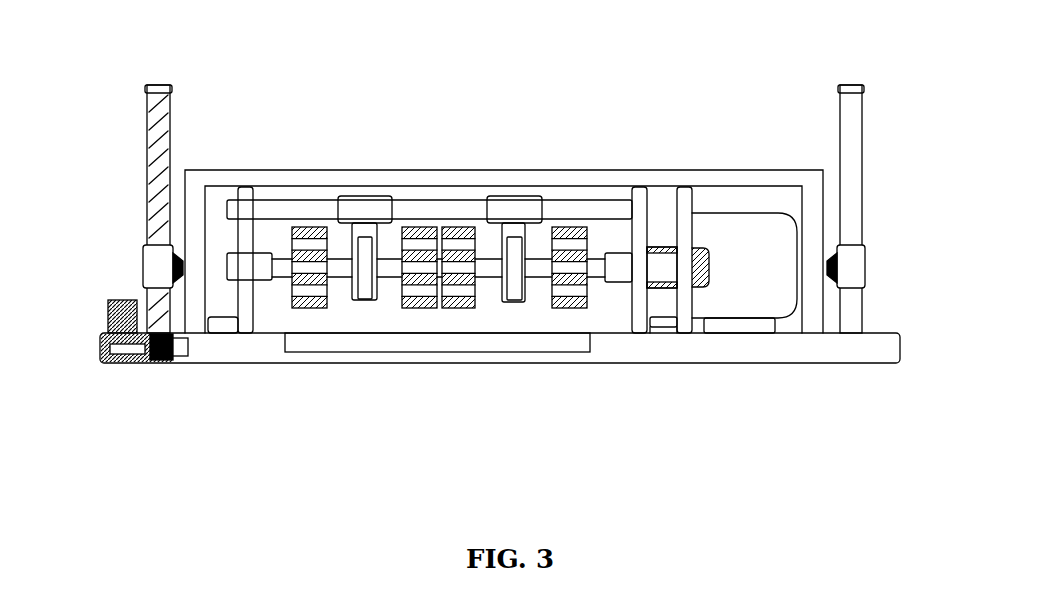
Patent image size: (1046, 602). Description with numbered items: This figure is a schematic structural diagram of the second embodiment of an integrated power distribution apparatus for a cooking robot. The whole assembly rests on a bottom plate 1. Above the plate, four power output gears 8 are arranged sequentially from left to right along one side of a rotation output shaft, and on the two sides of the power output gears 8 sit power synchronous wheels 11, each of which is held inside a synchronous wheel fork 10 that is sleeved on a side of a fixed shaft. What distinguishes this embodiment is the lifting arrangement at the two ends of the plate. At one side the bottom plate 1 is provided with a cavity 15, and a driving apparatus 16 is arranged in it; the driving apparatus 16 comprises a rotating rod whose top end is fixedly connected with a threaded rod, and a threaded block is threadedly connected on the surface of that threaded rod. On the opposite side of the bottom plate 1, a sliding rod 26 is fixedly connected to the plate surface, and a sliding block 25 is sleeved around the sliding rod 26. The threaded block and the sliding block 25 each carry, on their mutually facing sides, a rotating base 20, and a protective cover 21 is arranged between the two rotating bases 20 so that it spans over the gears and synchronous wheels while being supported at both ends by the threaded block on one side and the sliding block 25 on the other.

The bottom plate 1 is at (259, 344).
The power output gear 8 is at (417, 293).
The synchronous wheel fork 10 is at (365, 206).
The power synchronous wheel 11 is at (355, 267).
The cavity 15 is at (141, 357).
The driving apparatus 16 is at (118, 300).
The rotating base 20 is at (842, 284).
The protective cover 21 is at (240, 170).
The sliding block 25 is at (853, 263).
The sliding rod 26 is at (860, 117).